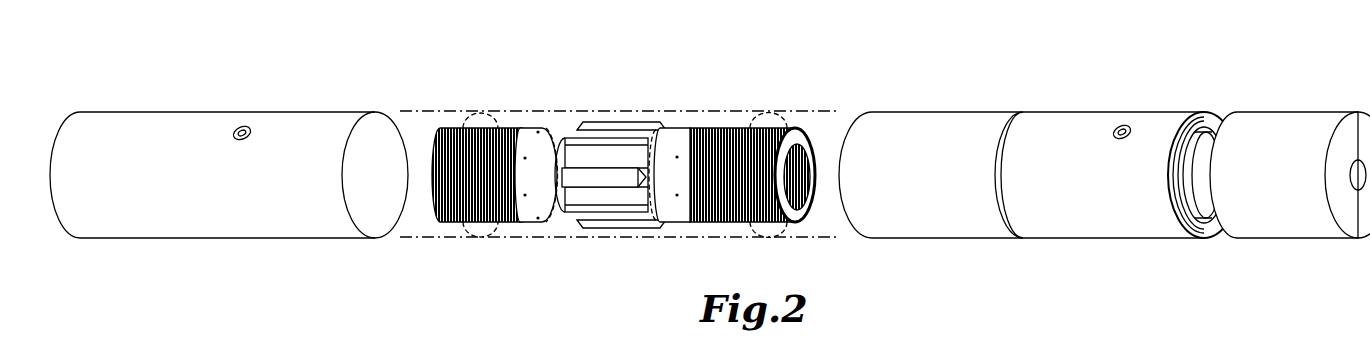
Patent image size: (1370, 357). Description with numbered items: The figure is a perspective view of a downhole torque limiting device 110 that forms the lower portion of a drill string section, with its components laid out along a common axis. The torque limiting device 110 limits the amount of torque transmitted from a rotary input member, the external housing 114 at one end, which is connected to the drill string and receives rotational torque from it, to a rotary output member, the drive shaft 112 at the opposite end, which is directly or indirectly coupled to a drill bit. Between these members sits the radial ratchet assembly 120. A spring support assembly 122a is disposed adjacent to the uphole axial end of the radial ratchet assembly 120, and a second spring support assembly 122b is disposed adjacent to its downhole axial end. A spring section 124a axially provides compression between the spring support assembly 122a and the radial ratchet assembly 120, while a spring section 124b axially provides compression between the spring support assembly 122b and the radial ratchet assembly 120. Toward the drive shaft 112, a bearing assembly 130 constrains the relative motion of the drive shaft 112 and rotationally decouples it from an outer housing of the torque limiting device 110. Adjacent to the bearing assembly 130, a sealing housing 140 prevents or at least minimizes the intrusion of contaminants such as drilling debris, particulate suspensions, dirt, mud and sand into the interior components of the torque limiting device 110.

The downhole torque limiting device 110 is at (1213, 262).
The drive shaft 112 is at (1318, 112).
The external housing 114 is at (153, 112).
The radial ratchet assembly 120 is at (573, 84).
The spring support assembly 122a is at (540, 130).
The spring support assembly 122b is at (685, 128).
The spring section 124a is at (447, 84).
The spring section 124b is at (708, 84).
The bearing assembly 130 is at (1030, 84).
The sealing housing 140 is at (1037, 84).